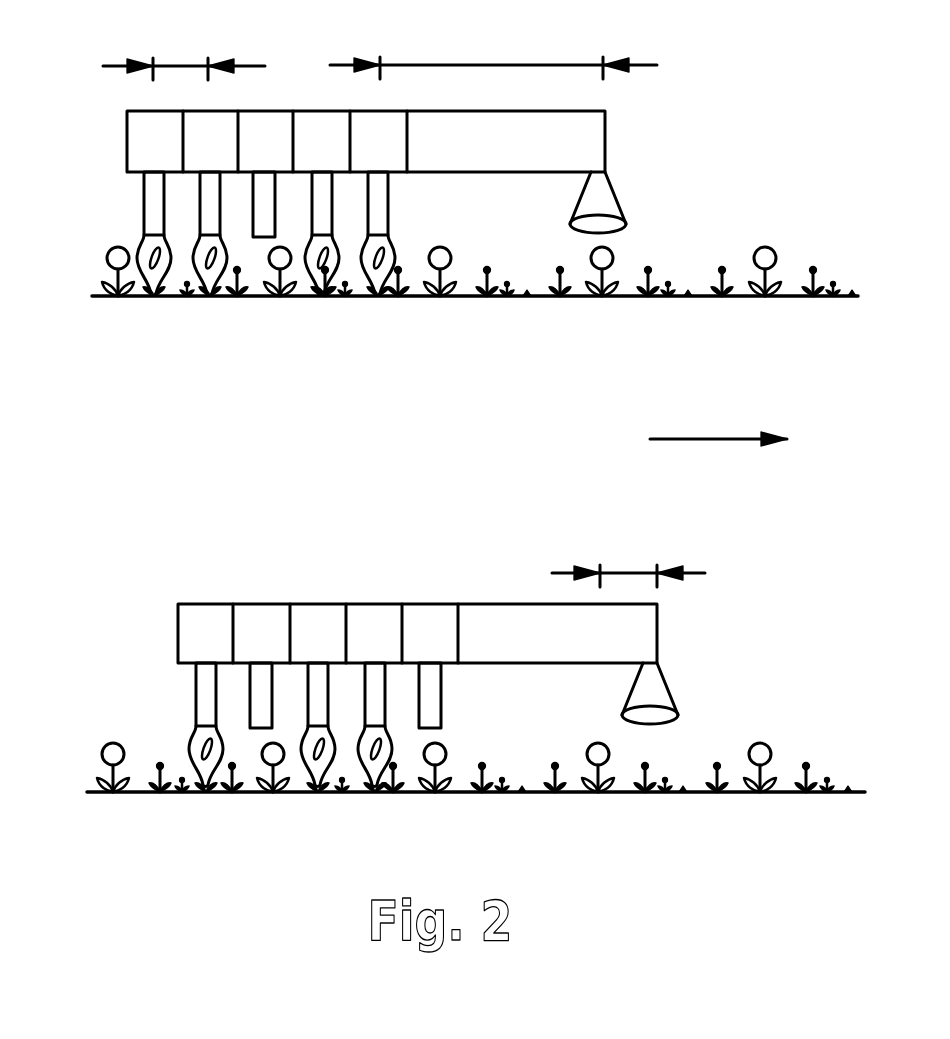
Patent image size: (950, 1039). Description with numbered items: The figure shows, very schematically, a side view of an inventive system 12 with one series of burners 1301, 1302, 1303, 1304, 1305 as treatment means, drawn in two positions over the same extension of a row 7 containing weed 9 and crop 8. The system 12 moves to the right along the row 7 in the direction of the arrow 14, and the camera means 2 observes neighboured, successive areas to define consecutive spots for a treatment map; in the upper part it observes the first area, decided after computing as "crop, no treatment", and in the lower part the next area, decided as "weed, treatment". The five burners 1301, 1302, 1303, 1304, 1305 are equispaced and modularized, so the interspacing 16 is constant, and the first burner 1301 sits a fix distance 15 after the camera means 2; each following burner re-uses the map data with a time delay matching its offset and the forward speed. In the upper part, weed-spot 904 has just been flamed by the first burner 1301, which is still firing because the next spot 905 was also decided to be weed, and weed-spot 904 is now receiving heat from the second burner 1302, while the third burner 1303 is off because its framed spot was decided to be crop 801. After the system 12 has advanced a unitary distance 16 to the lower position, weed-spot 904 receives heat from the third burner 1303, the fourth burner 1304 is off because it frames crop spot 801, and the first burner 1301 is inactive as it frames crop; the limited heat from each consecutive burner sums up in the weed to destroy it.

The camera means 2 is at (603, 200).
The row 7 is at (863, 295).
The crop 8 is at (118, 300).
The weed 9 is at (492, 300).
The inventive system 12 is at (685, 103).
The arrow / row direction 14 is at (726, 436).
The fix distance 15 is at (500, 63).
The interspacing / unitary distance 16 is at (193, 62).
The crop spot 801 is at (267, 300).
The weed-spot 904 is at (318, 300).
The next spot 905 is at (380, 300).
The first treatment means / burner 1301 is at (378, 205).
The second burner 1302 is at (323, 207).
The third burner 1303 is at (267, 202).
The fourth burner 1304 is at (208, 197).
The fifth burner 1305 is at (150, 193).